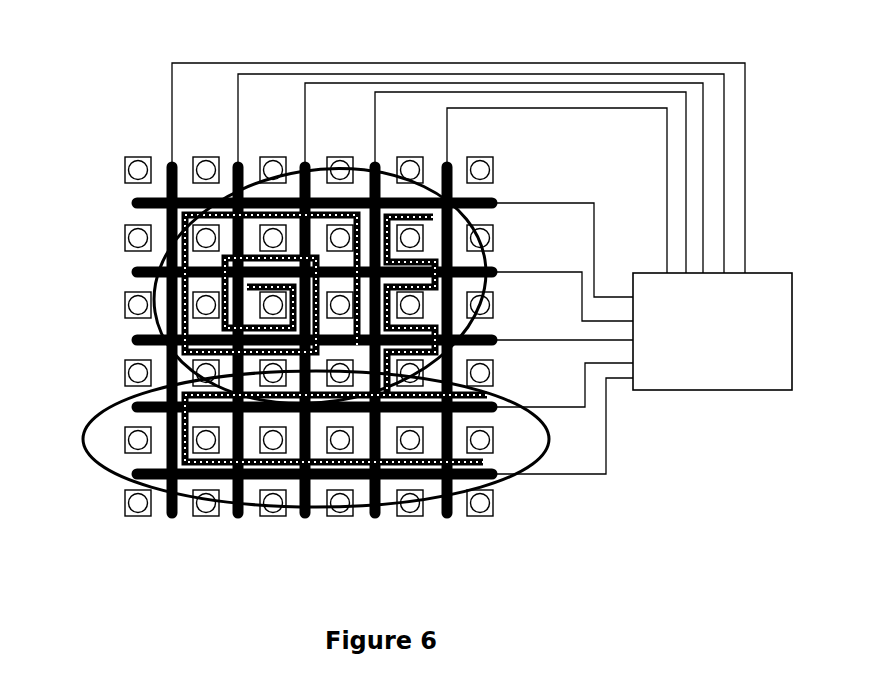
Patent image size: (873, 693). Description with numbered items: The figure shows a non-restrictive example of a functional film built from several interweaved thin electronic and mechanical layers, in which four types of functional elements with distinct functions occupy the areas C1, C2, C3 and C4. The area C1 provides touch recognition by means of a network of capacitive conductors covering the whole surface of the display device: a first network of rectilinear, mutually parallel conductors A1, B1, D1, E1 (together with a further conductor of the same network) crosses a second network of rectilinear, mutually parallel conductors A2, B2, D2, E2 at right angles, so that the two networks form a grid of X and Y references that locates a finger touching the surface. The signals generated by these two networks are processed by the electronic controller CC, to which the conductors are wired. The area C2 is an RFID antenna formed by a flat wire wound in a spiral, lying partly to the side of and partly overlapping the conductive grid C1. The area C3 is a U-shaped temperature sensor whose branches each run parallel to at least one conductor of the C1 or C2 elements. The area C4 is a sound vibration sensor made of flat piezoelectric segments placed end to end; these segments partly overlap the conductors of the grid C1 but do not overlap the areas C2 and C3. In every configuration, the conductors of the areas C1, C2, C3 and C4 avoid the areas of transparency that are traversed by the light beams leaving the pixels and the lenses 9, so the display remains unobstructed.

The lenses 9 is at (485, 170).
The network of capacitive conductors C1 is at (420, 305).
The RFID antenna C2 is at (160, 320).
The U-shaped temperature sensor C3 is at (477, 263).
The sound vibration sensor C4 is at (540, 468).
The electronic controller CC is at (712, 331).
The conductor of the first network A1 is at (364, 245).
The conductor of the first network B1 is at (364, 291).
The conductor of the first network D1 is at (364, 390).
The conductor of the first network E1 is at (364, 431).
The conductor of the second network A2 is at (453, 305).
The conductor of the second network B2 is at (475, 311).
The conductor of the second network D2 is at (524, 320).
The conductor of the second network E2 is at (551, 328).